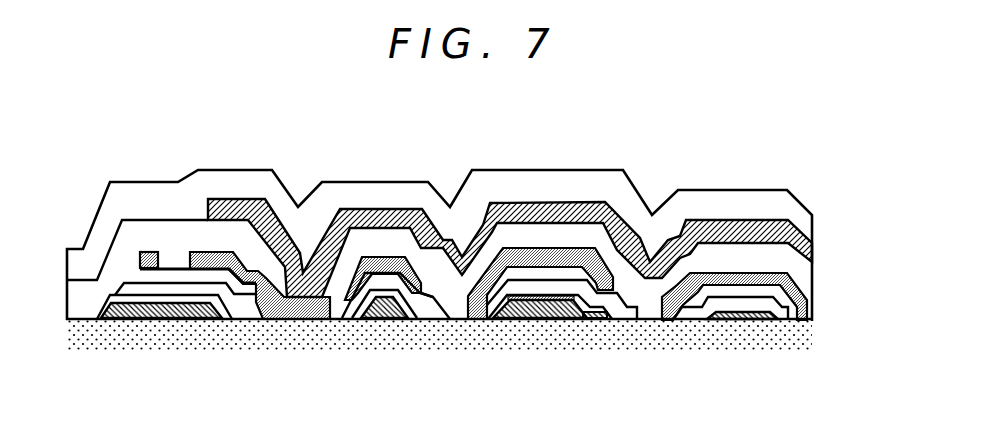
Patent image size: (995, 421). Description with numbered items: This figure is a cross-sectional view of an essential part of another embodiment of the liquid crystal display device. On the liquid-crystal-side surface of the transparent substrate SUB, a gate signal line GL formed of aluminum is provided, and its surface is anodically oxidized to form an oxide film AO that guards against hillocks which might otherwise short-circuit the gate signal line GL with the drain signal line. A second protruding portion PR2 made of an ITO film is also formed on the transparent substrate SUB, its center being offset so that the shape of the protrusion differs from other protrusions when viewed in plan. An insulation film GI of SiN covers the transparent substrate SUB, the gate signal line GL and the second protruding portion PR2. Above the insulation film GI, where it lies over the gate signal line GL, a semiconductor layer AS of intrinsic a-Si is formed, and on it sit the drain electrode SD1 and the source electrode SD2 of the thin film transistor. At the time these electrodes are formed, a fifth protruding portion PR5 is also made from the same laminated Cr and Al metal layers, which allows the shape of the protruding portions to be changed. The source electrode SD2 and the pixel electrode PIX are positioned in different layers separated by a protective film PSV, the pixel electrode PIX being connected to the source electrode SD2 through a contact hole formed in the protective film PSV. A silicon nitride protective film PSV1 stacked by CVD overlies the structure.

The transparent substrate SUB is at (418, 345).
The gate signal line GL is at (172, 320).
The oxide film AO is at (105, 300).
The insulation film GI is at (168, 290).
The semiconductor layer AS is at (180, 275).
The drain electrode SD1 is at (148, 252).
The source electrode SD2 is at (212, 253).
The second protruding portion PR2 is at (542, 293).
The fifth protruding portion PR5 is at (510, 238).
The pixel electrode PIX is at (731, 226).
The protective film PSV is at (373, 240).
The protective film PSV1 is at (695, 197).